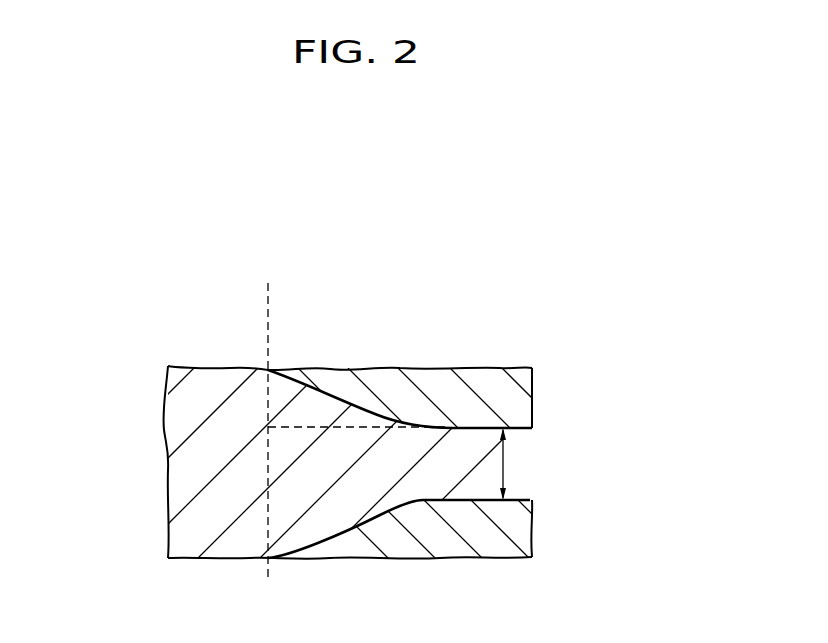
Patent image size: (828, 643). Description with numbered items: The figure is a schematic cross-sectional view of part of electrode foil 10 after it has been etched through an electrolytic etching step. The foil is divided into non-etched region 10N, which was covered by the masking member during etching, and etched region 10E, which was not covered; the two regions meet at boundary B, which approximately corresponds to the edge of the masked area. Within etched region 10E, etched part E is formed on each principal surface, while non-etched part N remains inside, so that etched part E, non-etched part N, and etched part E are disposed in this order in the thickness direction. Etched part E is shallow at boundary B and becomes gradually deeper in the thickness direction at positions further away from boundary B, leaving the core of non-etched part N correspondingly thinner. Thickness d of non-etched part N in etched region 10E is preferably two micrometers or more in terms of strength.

The electrode foil 10 is at (435, 207).
The non-etched region 10N is at (270, 264).
The etched region 10E is at (528, 270).
The boundary B is at (268, 290).
The etched part E is at (478, 392).
The non-etched part N is at (511, 461).
The thickness d is at (504, 447).